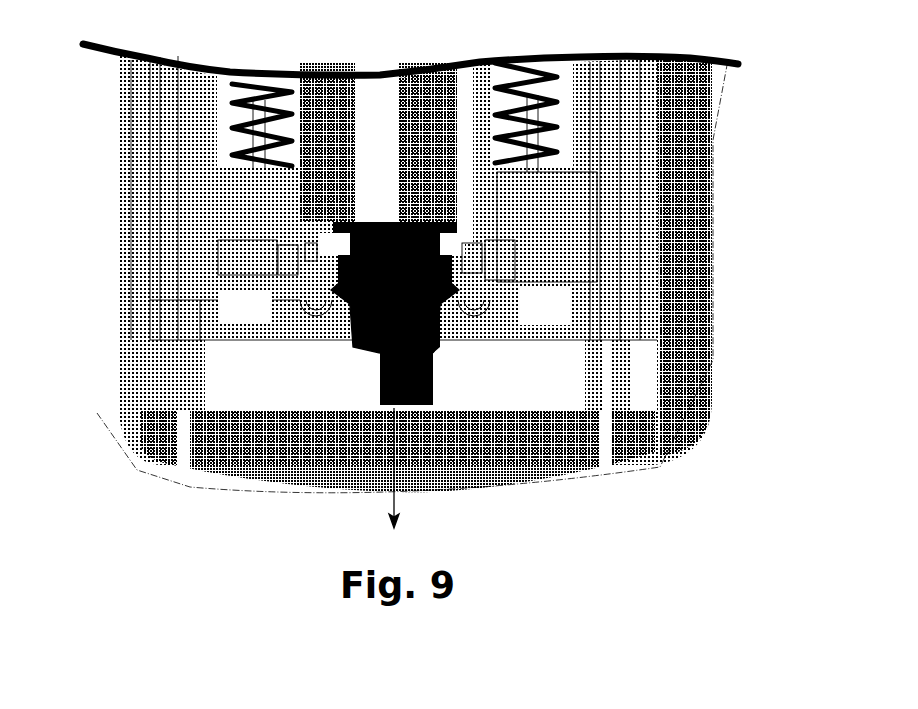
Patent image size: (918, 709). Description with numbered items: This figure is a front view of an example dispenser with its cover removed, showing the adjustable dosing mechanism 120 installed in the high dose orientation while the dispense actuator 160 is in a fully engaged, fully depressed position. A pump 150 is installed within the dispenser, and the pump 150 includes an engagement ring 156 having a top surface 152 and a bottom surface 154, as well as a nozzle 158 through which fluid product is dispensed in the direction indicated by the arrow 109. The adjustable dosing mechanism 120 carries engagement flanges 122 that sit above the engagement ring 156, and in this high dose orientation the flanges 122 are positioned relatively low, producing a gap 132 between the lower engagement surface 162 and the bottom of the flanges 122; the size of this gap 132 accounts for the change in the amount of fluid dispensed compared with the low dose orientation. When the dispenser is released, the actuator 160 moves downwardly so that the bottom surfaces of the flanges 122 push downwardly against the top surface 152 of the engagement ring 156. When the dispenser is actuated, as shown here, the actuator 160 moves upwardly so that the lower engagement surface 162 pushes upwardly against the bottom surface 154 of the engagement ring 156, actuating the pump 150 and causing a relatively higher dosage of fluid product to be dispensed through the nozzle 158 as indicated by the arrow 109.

The arrow 109 is at (397, 462).
The adjustable dosing mechanism 120 is at (493, 260).
The engagement flange 122 is at (455, 280).
The gap 132 is at (330, 285).
The pump 150 is at (333, 225).
The top surface 152 is at (433, 310).
The bottom surface 154 is at (352, 312).
The engagement ring 156 is at (445, 318).
The nozzle 158 is at (377, 402).
The actuator 160 is at (540, 197).
The lower engagement surface 162 is at (345, 303).